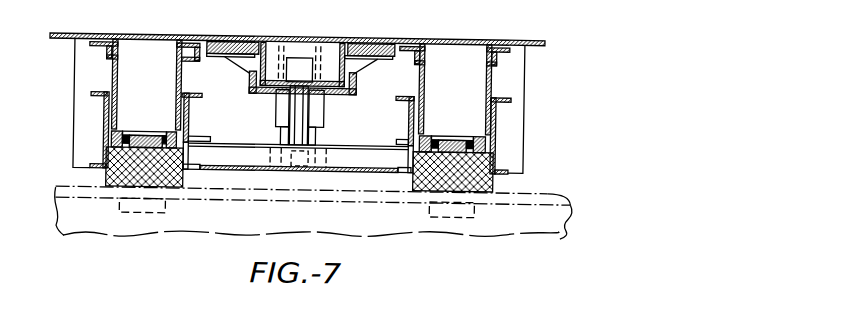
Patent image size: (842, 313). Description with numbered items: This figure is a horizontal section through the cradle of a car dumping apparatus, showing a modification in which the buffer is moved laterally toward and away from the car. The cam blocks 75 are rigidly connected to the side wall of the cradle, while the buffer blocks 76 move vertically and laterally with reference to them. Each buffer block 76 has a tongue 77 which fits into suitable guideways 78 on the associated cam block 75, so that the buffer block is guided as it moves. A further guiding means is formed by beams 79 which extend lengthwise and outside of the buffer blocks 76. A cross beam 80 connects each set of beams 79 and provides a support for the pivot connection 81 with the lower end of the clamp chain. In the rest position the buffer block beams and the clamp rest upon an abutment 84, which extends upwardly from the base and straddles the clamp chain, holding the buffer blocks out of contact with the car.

The cam block 75 is at (185, 71).
The buffer block 76 is at (490, 185).
The tongue 77 is at (162, 120).
The guideway 78 is at (116, 135).
The beam 79 is at (200, 97).
The cross beam 80 is at (235, 164).
The pivot connection 81 is at (300, 164).
The abutment 84 is at (75, 127).